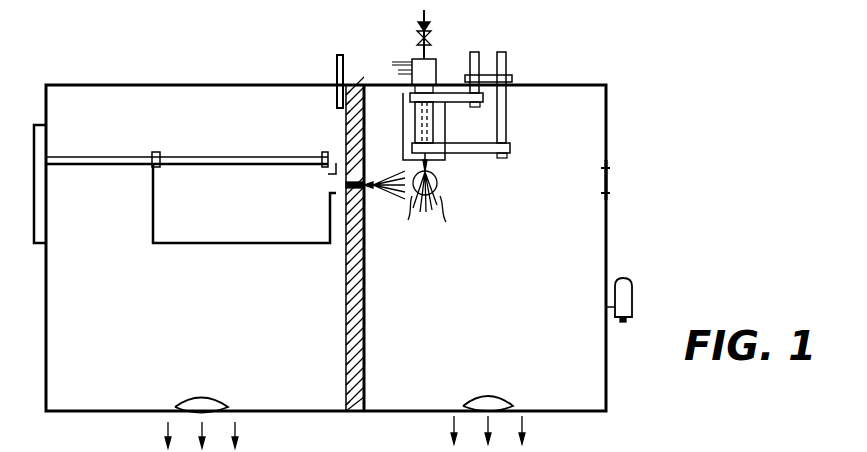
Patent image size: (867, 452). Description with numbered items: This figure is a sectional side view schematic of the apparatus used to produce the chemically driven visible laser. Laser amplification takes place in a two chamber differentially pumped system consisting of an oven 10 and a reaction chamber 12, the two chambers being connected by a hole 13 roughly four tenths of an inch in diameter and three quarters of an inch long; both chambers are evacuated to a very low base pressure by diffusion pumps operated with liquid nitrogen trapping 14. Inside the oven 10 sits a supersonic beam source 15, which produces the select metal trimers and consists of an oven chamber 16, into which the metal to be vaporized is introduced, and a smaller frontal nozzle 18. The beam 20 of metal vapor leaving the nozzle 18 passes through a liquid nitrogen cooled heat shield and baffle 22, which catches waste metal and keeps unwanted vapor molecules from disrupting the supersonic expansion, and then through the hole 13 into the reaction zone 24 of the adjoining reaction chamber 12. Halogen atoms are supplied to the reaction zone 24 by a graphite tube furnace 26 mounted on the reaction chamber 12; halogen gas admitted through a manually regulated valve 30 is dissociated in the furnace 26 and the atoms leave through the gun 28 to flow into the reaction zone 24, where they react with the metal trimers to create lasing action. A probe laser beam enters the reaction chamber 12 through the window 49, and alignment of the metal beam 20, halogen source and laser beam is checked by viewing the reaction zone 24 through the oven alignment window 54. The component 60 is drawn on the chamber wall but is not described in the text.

The oven 10 is at (202, 336).
The reaction chamber 12 is at (498, 327).
The hole 13 is at (364, 180).
The liquid nitrogen trapping 14 is at (224, 402).
The supersonic beam source 15 is at (144, 250).
The oven chamber 16 is at (163, 205).
The frontal nozzle 18 is at (338, 150).
The beam of metal vapor 20 is at (390, 194).
The liquid nitrogen cooled heat shield and baffle 22 is at (346, 322).
The reaction zone 24 is at (416, 198).
The graphite tube furnace 26 is at (440, 66).
The gun 28 is at (445, 170).
The valve 30 is at (432, 41).
The window 49 is at (436, 192).
The oven alignment window 54 is at (608, 180).
The sensor 60 is at (622, 278).